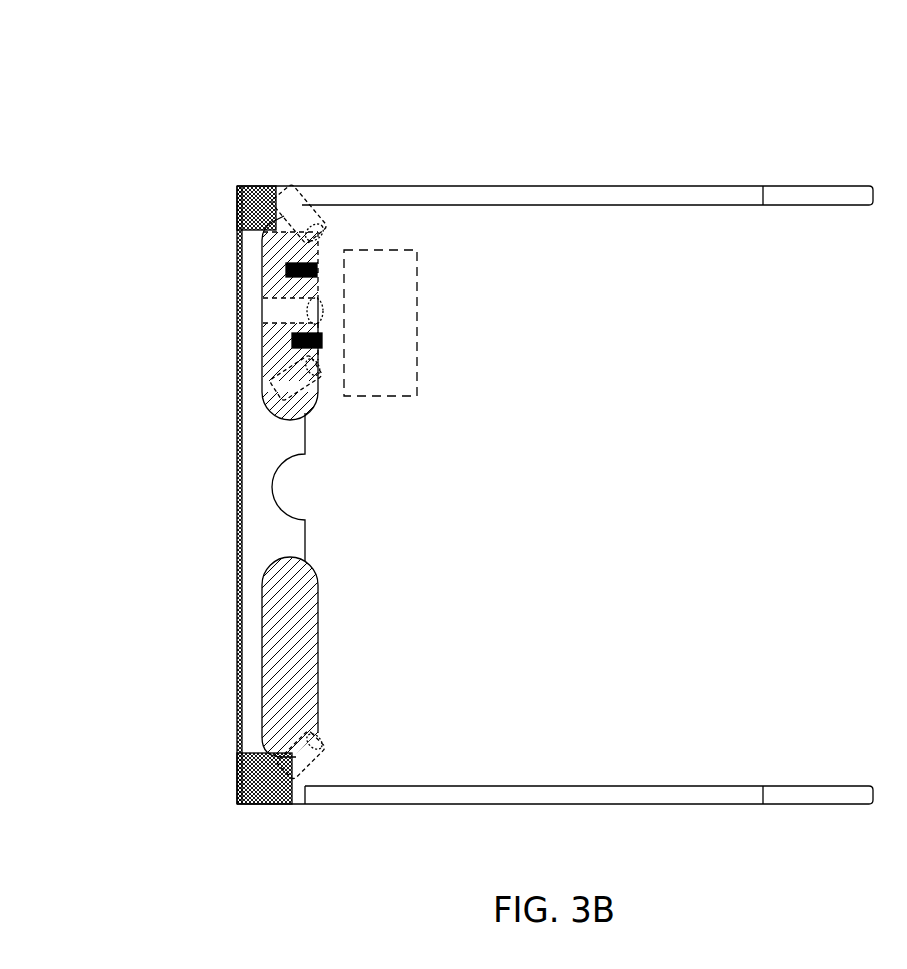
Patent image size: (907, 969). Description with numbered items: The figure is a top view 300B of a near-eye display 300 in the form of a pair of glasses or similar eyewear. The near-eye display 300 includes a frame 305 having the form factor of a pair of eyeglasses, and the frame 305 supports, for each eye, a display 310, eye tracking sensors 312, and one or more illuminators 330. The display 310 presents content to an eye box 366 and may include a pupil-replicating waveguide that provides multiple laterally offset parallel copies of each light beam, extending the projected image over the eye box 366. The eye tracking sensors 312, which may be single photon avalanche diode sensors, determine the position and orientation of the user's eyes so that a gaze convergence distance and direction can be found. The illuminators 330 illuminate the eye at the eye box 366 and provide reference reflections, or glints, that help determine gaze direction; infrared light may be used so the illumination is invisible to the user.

The top view 300B is at (573, 26).
The near-eye display 300 is at (439, 112).
The frame 305 is at (599, 191).
The display 310 is at (264, 397).
The eye tracking sensors 312 is at (313, 324).
The illuminators 330 is at (300, 335).
The eye box 366 is at (417, 327).